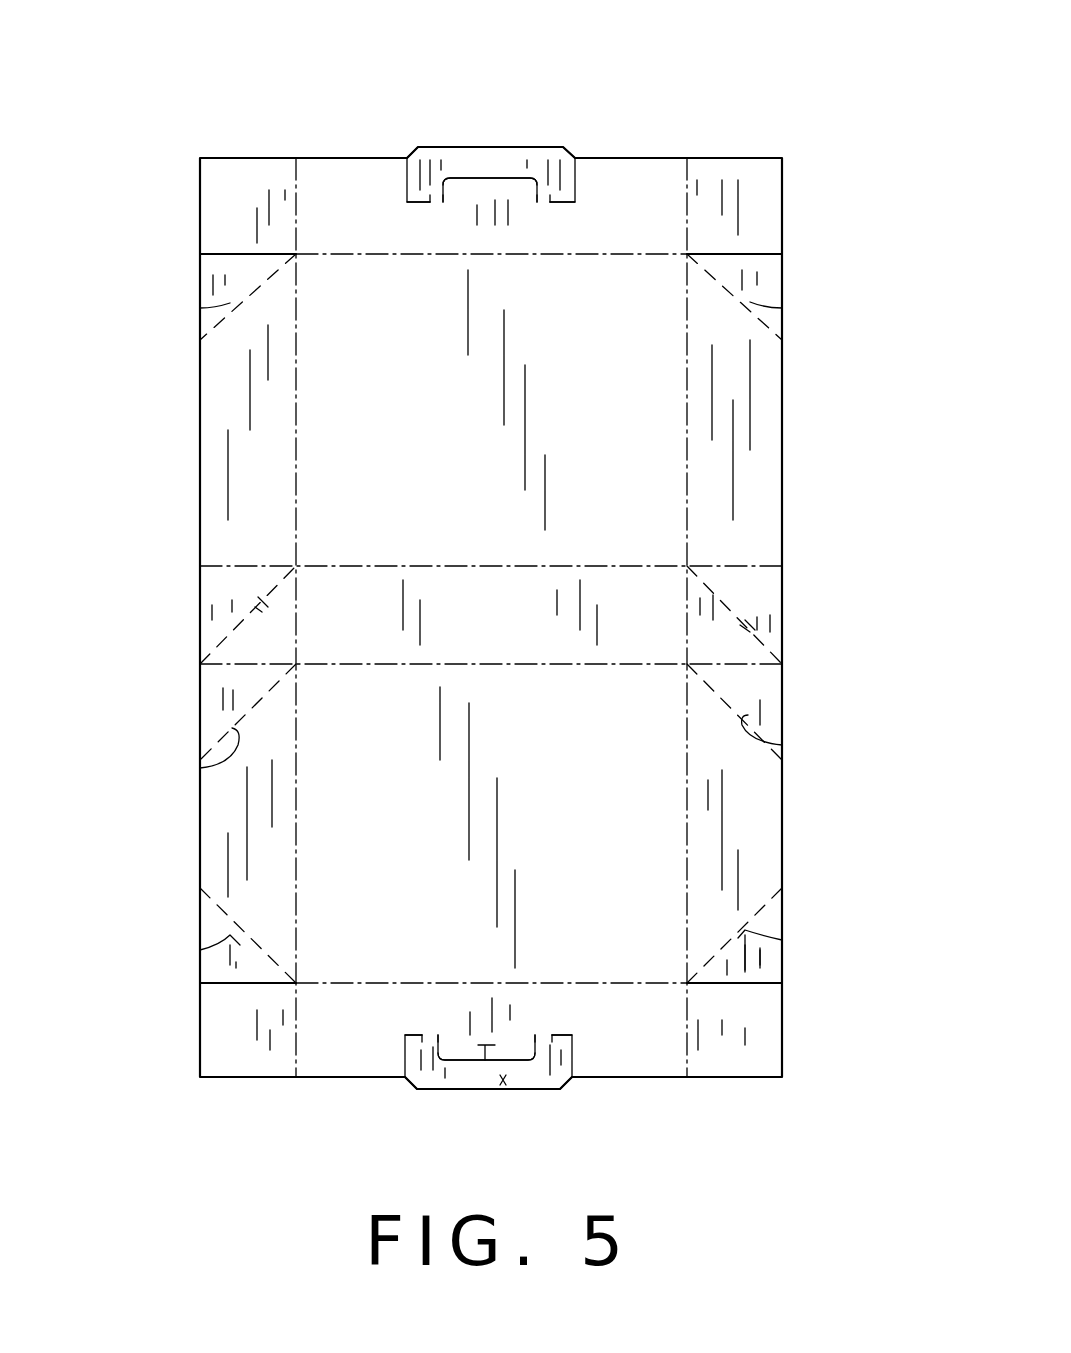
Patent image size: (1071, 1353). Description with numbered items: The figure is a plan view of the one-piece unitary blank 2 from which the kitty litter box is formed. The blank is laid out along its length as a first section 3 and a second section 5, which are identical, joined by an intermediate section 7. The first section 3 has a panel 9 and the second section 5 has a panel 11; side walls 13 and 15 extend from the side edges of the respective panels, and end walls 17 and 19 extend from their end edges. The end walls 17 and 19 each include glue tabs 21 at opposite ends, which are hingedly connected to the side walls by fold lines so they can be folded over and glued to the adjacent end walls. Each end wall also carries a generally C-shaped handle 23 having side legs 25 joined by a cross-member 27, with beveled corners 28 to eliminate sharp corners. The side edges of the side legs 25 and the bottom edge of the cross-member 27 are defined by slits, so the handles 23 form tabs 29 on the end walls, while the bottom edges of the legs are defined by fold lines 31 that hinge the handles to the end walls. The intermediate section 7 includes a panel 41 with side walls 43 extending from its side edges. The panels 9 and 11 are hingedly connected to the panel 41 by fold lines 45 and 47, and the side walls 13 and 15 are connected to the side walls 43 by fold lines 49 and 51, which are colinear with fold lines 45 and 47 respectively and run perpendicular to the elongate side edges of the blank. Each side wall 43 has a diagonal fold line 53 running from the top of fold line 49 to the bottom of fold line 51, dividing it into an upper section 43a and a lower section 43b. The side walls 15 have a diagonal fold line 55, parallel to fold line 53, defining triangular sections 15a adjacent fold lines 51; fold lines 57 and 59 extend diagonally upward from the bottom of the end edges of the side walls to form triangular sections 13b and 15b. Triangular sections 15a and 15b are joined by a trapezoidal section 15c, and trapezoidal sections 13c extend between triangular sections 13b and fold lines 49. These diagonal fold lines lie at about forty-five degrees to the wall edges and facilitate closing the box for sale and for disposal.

The one-piece unitary blank 2 is at (807, 98).
The first section 3 is at (160, 431).
The second section 5 is at (160, 851).
The intermediate section 7 is at (165, 625).
The panel 9 is at (452, 390).
The panel 11 is at (416, 885).
The side walls 13 is at (200, 470).
The triangular sections 13b is at (248, 290).
The trapezoidal sections 13c is at (229, 380).
The side walls 15 is at (200, 810).
The triangular sections 15a is at (232, 692).
The triangular sections 15b is at (228, 958).
The trapezoidal section 15c is at (233, 830).
The end wall 17 is at (658, 157).
The end wall 19 is at (657, 1078).
The glue tabs 21 is at (240, 206).
The handle 23 is at (503, 145).
The side legs 25 is at (413, 1050).
The cross-member 27 is at (505, 1082).
The corners 28 is at (412, 148).
The tabs 29 is at (490, 190).
The fold lines 31 is at (430, 195).
The panel 41 is at (522, 622).
The side walls 43 is at (190, 588).
The upper section 43a is at (240, 606).
The lower section 43b is at (278, 656).
The fold line 45 is at (413, 566).
The fold line 47 is at (609, 664).
The fold lines 49 is at (258, 566).
The fold lines 51 is at (238, 666).
The diagonal fold line 53 is at (262, 600).
The diagonal fold line 55 is at (200, 768).
The fold lines 57 is at (200, 308).
The fold lines 59 is at (200, 950).